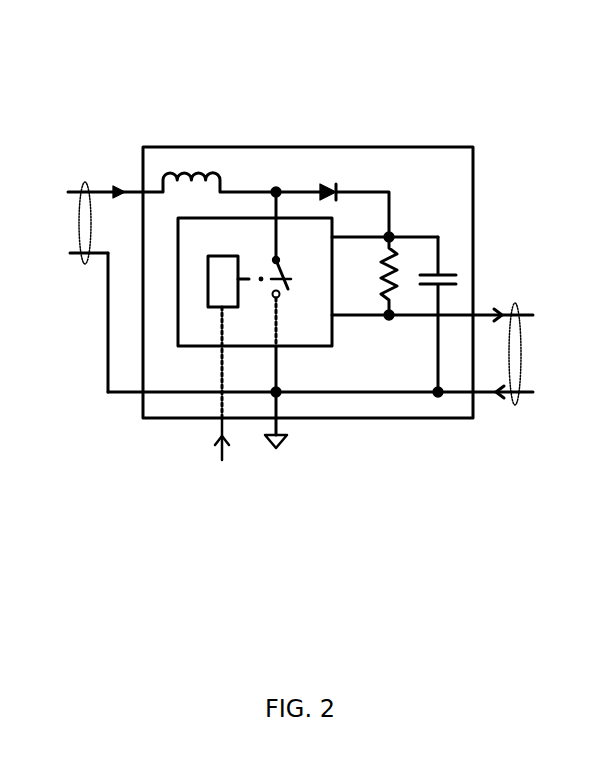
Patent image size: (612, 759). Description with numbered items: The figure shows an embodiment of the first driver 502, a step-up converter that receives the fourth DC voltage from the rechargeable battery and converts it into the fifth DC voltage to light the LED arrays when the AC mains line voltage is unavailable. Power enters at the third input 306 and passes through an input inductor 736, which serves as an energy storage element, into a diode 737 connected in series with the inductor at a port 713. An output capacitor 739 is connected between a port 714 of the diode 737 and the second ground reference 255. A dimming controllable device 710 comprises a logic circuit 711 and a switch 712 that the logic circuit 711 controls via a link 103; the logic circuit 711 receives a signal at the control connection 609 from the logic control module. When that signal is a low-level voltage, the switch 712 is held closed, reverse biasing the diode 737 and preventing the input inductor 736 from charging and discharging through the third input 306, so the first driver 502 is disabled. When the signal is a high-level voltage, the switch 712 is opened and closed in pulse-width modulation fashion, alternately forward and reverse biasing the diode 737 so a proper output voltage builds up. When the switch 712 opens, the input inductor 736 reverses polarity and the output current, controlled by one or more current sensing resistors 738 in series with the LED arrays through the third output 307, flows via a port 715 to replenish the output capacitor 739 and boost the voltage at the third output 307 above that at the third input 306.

The first driver 502 is at (475, 147).
The third input 306 is at (82, 184).
The input inductor 736 is at (190, 170).
The port 713 is at (275, 190).
The diode 737 is at (331, 183).
The port 714 is at (390, 234).
The current sensing resistors 738 is at (378, 296).
The output capacitor 739 is at (445, 272).
The third output 307 is at (517, 303).
The port 715 is at (389, 317).
The dimming controllable device 710 is at (185, 350).
The logic circuit 711 is at (208, 290).
The switch 712 is at (283, 291).
The second ground reference 255 is at (281, 448).
The link 103 is at (245, 281).
The control connection 609 is at (222, 461).